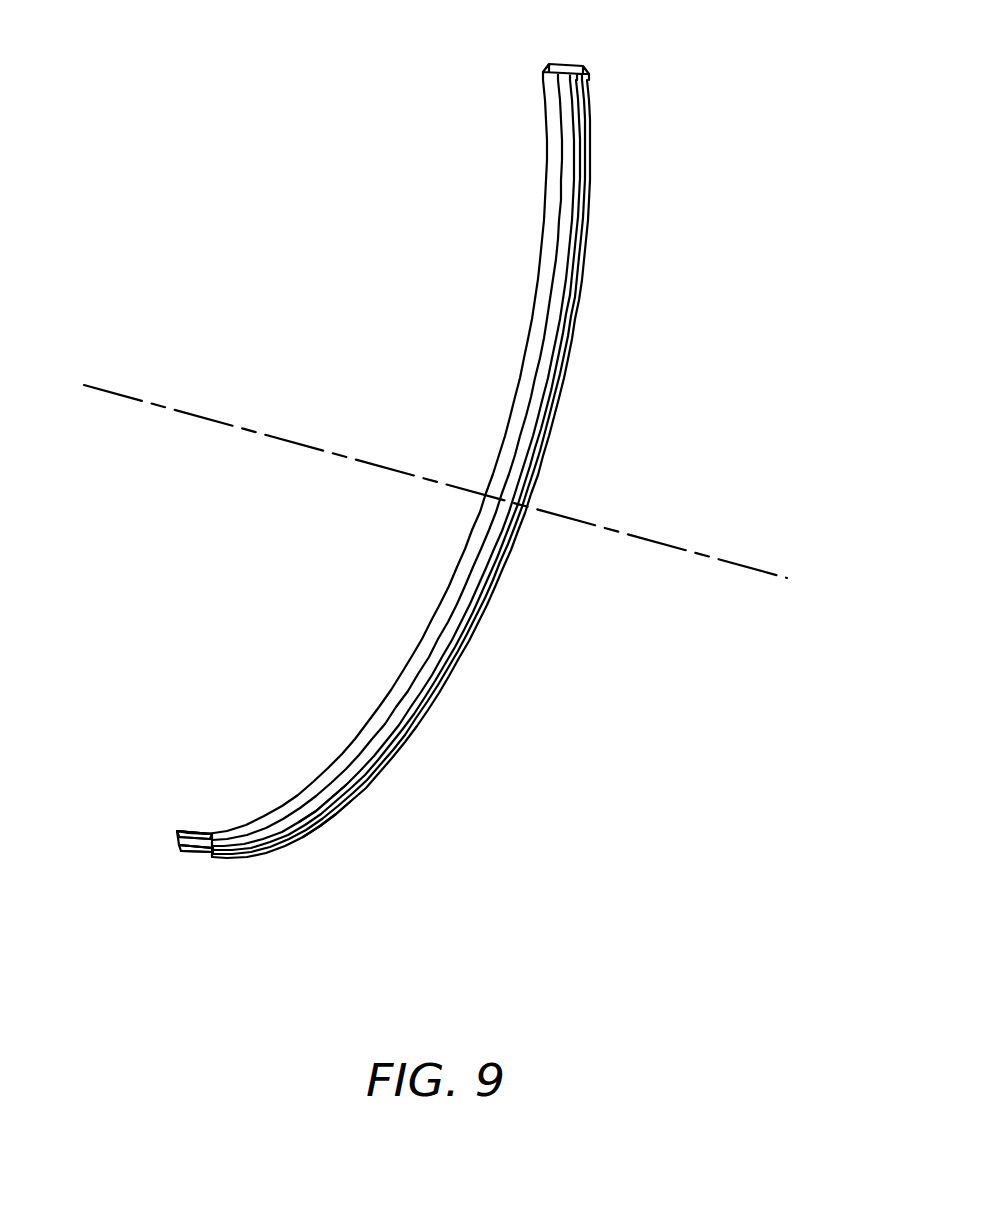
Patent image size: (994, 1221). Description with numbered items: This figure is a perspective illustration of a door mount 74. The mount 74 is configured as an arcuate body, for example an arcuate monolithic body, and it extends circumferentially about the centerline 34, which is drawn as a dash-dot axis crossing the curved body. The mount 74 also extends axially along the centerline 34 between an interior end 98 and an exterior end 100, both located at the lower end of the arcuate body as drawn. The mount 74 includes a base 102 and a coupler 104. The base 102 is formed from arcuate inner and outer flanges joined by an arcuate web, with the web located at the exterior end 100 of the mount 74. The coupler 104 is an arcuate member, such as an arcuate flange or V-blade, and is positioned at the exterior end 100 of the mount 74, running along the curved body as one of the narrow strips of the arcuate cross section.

The mount 74 is at (622, 83).
The centerline 34 is at (768, 576).
The interior end 98 is at (178, 832).
The exterior end 100 is at (227, 830).
The base 102 is at (199, 866).
The coupler 104 is at (332, 811).